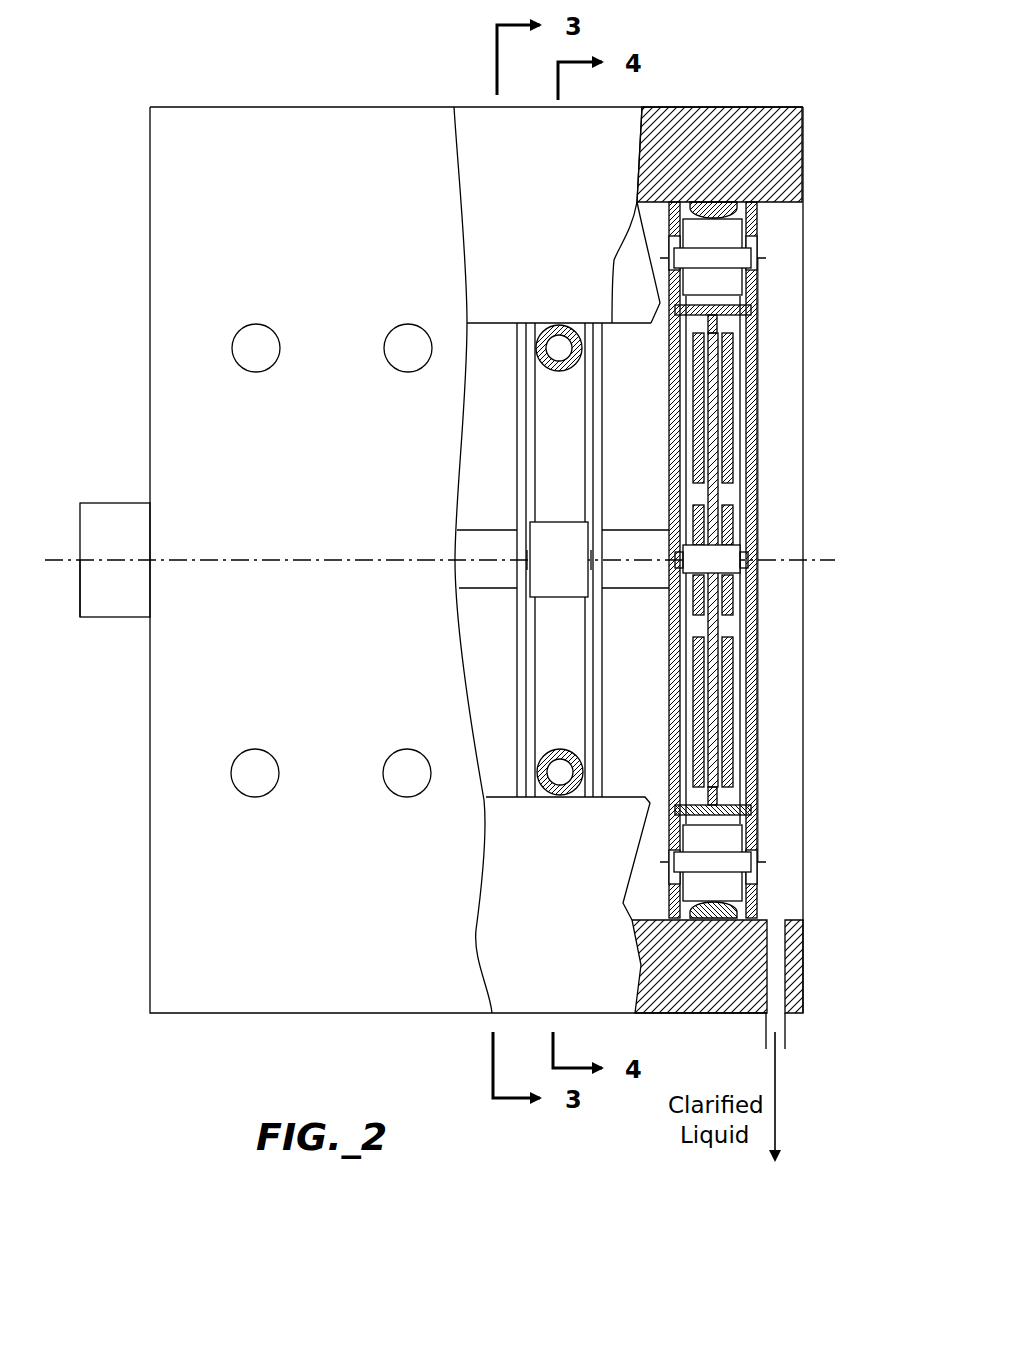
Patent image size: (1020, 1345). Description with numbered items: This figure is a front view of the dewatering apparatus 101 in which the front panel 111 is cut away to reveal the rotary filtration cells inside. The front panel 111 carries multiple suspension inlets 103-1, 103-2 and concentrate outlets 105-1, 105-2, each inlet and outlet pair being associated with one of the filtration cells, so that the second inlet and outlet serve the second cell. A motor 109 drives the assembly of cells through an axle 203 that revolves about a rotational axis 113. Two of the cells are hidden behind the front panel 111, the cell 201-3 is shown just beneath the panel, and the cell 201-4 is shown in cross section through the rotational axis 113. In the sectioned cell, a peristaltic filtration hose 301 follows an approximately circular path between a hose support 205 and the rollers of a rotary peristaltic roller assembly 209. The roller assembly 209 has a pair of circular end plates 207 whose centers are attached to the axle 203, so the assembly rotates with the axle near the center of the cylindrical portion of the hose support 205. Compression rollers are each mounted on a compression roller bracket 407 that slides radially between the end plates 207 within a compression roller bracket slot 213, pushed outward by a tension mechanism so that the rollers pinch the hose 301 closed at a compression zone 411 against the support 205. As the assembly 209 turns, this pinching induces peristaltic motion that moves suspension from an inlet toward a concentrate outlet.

The dewatering apparatus 101 is at (194, 81).
The front panel 111 is at (305, 107).
The rotational axis 113 is at (46, 560).
The motor 109 is at (130, 618).
The concentrate outlet 105-1 is at (257, 323).
The concentrate outlet 105-2 is at (408, 323).
The suspension inlet 103-1 is at (255, 748).
The suspension inlet 103-2 is at (407, 748).
The rotary filtration cell 201-3 is at (605, 408).
The rotary filtration cell 201-4 is at (670, 490).
The axle 203 is at (657, 554).
The hose support 205 is at (642, 107).
The circular end plates 207 is at (757, 675).
The rotary peristaltic roller assembly 209 is at (786, 290).
The compression roller bracket slot 213 is at (753, 238).
The peristaltic filtration hose 301 is at (583, 773).
The compression roller bracket 407 is at (750, 307).
The compression zone 411 is at (757, 203).